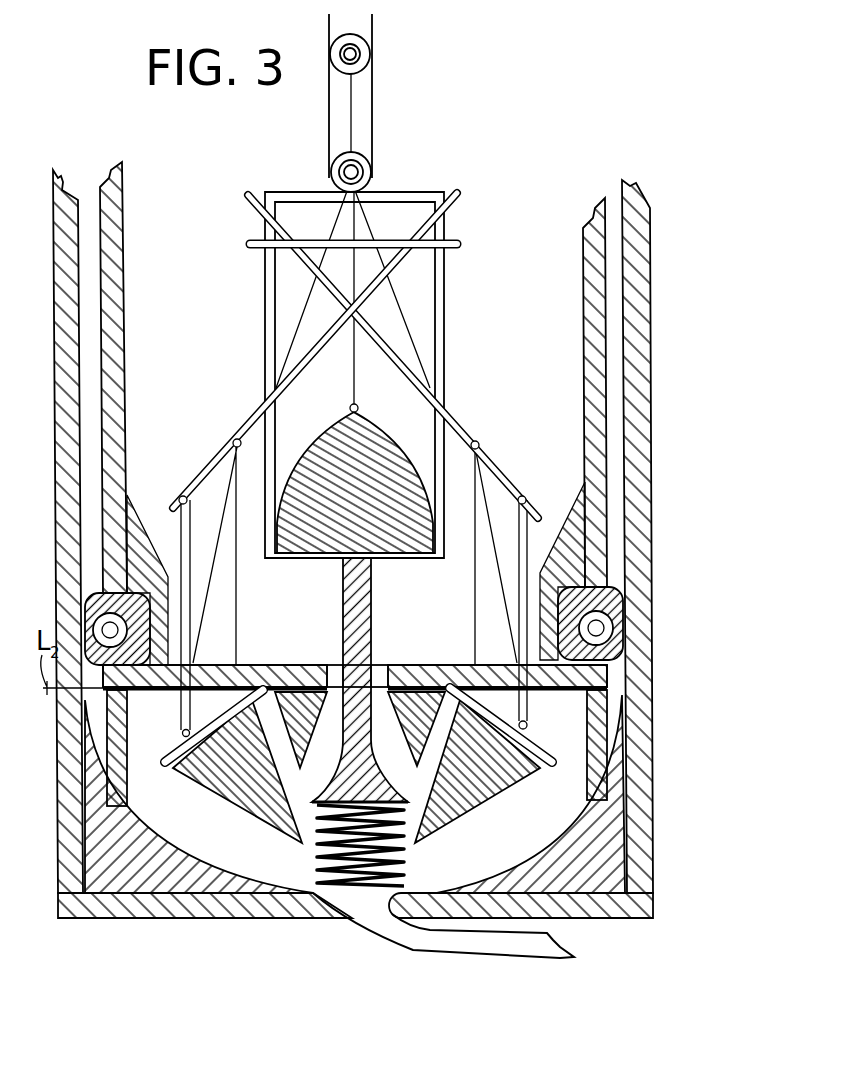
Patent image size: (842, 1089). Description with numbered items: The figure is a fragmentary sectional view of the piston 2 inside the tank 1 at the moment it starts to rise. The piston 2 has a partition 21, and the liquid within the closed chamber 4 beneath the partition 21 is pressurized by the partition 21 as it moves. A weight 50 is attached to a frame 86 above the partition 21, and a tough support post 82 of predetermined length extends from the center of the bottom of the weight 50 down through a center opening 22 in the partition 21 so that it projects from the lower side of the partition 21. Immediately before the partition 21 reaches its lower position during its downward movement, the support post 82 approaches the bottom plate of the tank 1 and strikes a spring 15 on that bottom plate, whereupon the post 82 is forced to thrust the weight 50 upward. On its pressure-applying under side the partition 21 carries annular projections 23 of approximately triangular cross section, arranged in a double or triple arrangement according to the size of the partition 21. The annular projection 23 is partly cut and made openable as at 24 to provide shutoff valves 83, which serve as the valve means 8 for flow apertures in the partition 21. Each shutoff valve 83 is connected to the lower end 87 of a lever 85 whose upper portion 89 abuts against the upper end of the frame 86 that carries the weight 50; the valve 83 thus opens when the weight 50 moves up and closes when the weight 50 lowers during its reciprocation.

The tank 1 is at (657, 470).
The piston 2 is at (607, 321).
The closed chamber 4 is at (542, 826).
The valve means 8 is at (192, 540).
The spring 15 is at (378, 873).
The partition 21 is at (567, 675).
The center opening 22 is at (335, 685).
The annular projections 23 is at (247, 785).
The openable cut portion 24 is at (177, 752).
The weight 50 is at (375, 470).
The support post 82 is at (360, 623).
The shutoff valves 83 is at (188, 665).
The lever 85 is at (250, 428).
The frame 86 is at (439, 323).
The lower end of the lever 87 is at (178, 498).
The upper portion of the lever 89 is at (446, 215).